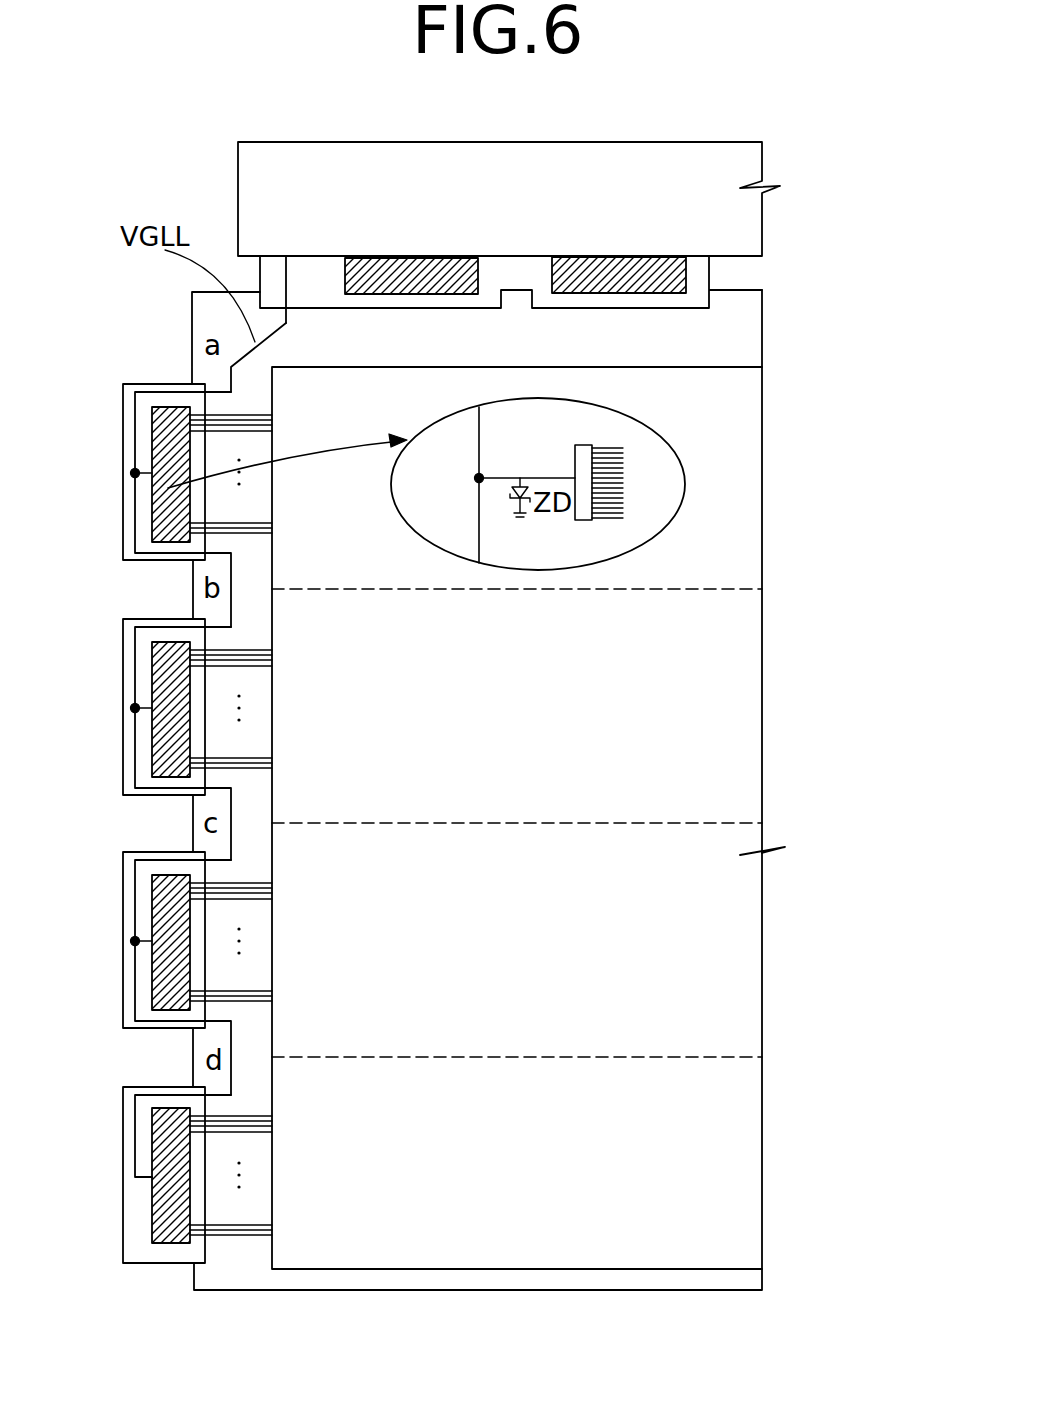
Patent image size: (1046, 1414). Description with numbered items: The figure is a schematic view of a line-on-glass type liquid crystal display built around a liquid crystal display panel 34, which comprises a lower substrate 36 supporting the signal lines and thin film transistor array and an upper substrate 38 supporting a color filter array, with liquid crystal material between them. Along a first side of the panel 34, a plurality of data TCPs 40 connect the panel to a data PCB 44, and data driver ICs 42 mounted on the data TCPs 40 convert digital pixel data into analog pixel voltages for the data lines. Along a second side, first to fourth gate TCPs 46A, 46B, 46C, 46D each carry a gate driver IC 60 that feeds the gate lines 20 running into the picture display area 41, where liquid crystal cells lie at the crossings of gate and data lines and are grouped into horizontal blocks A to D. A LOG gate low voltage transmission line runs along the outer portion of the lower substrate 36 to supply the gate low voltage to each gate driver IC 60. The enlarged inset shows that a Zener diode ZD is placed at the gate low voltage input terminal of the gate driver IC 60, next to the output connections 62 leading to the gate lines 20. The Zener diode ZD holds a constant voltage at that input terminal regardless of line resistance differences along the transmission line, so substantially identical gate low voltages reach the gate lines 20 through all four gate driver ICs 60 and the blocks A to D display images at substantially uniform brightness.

The gate lines 20 is at (260, 412).
The liquid crystal display panel 34 is at (813, 770).
The lower substrate 36 is at (750, 350).
The upper substrate 38 is at (745, 412).
The data TCP 40 is at (709, 268).
The picture display area 41 is at (542, 668).
The data driver IC 42 is at (573, 257).
The data PCB 44 is at (509, 176).
The first gate TCP 46A is at (123, 441).
The second gate TCP 46B is at (123, 676).
The third gate TCP 46C is at (123, 901).
The fourth gate TCP 46D is at (123, 1135).
The gate driver IC 60 is at (158, 508).
The gate link lines 62 is at (613, 445).